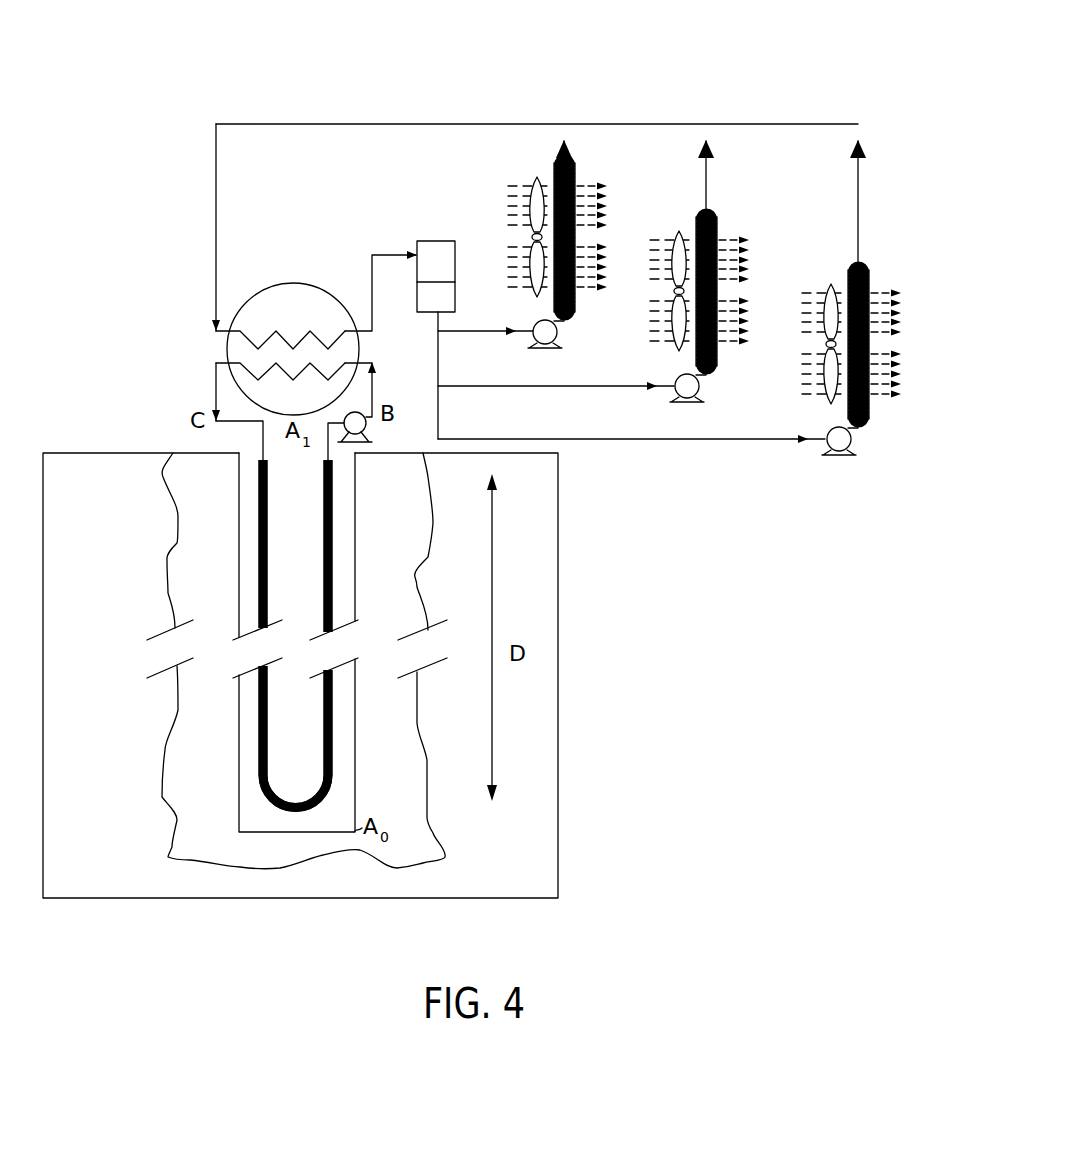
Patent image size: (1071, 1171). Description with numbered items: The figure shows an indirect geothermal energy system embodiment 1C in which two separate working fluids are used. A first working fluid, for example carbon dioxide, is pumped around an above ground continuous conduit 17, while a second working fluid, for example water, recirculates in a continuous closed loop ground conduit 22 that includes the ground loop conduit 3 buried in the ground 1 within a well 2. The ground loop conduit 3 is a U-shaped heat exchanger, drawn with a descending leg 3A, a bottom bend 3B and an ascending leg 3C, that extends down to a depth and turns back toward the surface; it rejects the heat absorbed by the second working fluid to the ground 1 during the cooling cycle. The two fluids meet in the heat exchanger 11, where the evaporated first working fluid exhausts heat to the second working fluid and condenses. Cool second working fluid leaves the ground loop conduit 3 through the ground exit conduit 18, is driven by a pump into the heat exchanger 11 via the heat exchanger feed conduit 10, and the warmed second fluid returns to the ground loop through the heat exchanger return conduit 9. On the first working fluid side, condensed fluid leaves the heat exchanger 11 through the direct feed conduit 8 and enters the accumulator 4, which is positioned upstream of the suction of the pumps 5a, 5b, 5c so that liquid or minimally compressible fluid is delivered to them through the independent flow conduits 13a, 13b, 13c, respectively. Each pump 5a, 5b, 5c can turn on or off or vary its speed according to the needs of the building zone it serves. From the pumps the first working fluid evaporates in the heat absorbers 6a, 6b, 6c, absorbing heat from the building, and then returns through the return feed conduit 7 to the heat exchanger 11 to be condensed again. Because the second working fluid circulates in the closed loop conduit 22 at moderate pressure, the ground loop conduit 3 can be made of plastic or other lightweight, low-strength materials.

The indirect geothermal energy system embodiment 1C is at (185, 104).
The ground 1 is at (77, 452).
The well casing 2 is at (239, 489).
The ground loop conduit 3 is at (325, 608).
The descending pipe section 3A is at (262, 625).
The bottom bend of pipe 3B is at (240, 833).
The ascending pipe section 3C is at (332, 565).
The accumulator 4 is at (416, 239).
The pump 5a is at (546, 349).
The pump 5b is at (688, 402).
The pump 5c is at (840, 455).
The heat absorber 6a is at (557, 230).
The heat absorber 6b is at (699, 257).
The heat absorber 6c is at (851, 284).
The return feed conduit 7 is at (214, 206).
The direct feed conduit 8 is at (368, 253).
The heat exchanger return conduit 9 is at (214, 378).
The heat exchanger feed conduit 10 is at (376, 395).
The heat exchanger 11 is at (210, 333).
The independent flow conduit 13a is at (485, 320).
The independent flow conduit 13b is at (556, 374).
The independent flow conduit 13c is at (631, 427).
The above ground continuous conduit 17 is at (655, 124).
The ground exit conduit 18 is at (330, 446).
The continuous closed loop ground conduit 22 is at (214, 398).